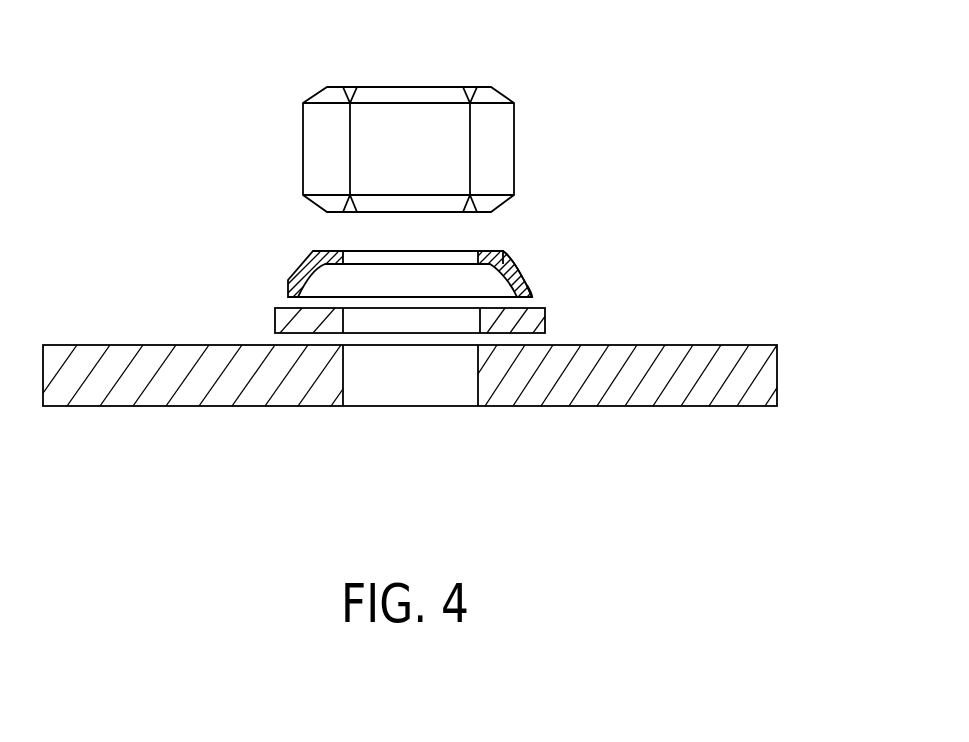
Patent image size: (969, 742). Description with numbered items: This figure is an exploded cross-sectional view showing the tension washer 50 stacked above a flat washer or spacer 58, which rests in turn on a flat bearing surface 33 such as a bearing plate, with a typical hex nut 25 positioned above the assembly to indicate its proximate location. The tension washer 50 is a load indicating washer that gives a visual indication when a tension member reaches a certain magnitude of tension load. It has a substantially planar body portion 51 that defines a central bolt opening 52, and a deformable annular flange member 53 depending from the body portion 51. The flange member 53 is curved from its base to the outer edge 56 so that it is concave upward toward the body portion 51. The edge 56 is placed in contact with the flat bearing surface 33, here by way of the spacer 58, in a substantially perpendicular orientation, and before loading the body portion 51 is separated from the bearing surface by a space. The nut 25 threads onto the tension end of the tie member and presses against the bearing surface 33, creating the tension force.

The nut 25 is at (517, 115).
The tension washer 50 is at (215, 270).
The body portion 51 is at (488, 251).
The central bolt opening 52 is at (360, 250).
The deformable annular flange member 53 is at (518, 265).
The edge 56 is at (533, 285).
The flat washer or spacer 58 is at (275, 315).
The flat bearing surface 33 is at (282, 307).